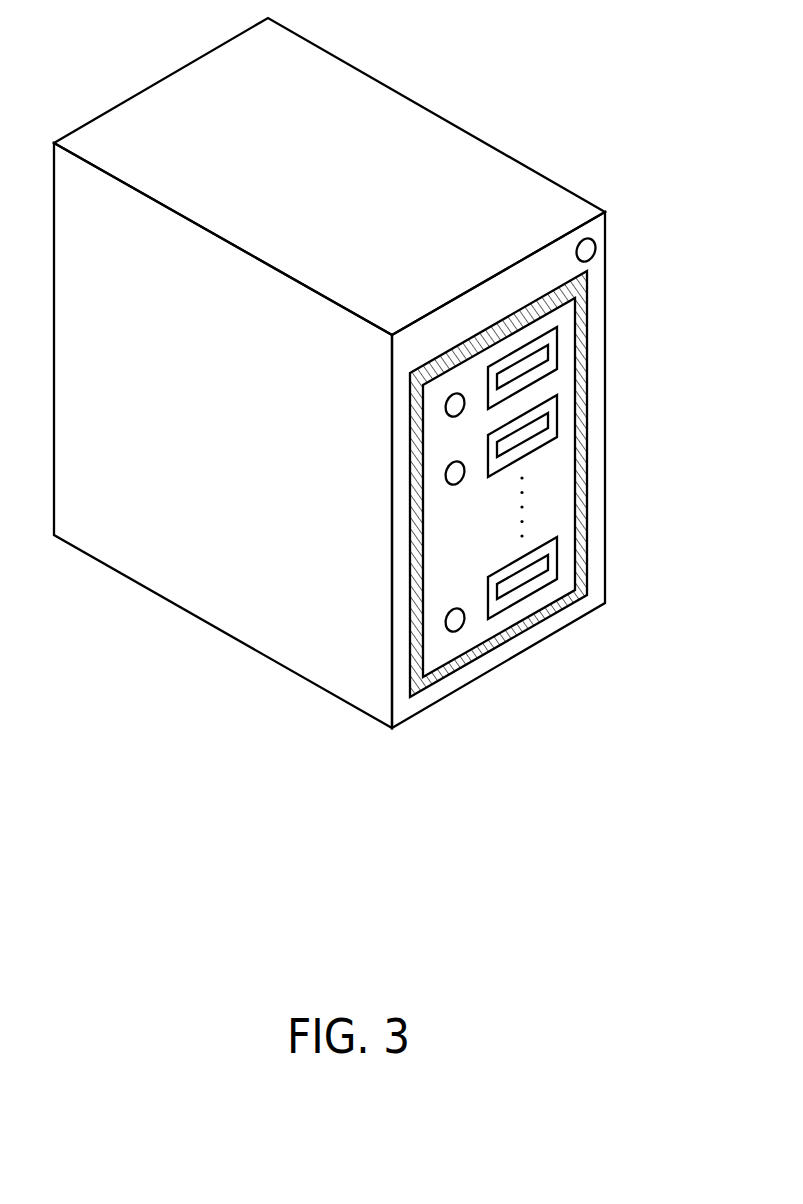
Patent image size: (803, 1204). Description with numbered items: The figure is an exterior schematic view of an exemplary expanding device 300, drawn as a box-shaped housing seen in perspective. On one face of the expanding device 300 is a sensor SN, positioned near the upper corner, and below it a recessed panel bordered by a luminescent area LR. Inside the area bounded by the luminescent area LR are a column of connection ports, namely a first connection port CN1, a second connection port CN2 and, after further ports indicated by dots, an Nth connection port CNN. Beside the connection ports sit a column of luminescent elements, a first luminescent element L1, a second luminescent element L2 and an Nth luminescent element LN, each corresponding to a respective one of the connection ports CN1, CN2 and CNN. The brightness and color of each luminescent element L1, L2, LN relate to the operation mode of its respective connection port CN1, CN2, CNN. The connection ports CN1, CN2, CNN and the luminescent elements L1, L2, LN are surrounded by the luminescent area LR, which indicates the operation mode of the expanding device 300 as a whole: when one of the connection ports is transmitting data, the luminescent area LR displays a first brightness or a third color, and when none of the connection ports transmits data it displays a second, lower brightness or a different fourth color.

The expanding device 300 is at (622, 51).
The sensor SN is at (595, 248).
The luminescent area LR is at (588, 297).
The connection port CN1 is at (557, 345).
The connection port CN2 is at (557, 413).
The connection port CNN is at (557, 558).
The luminescent element L1 is at (455, 407).
The luminescent element L2 is at (455, 478).
The luminescent element LN is at (455, 626).